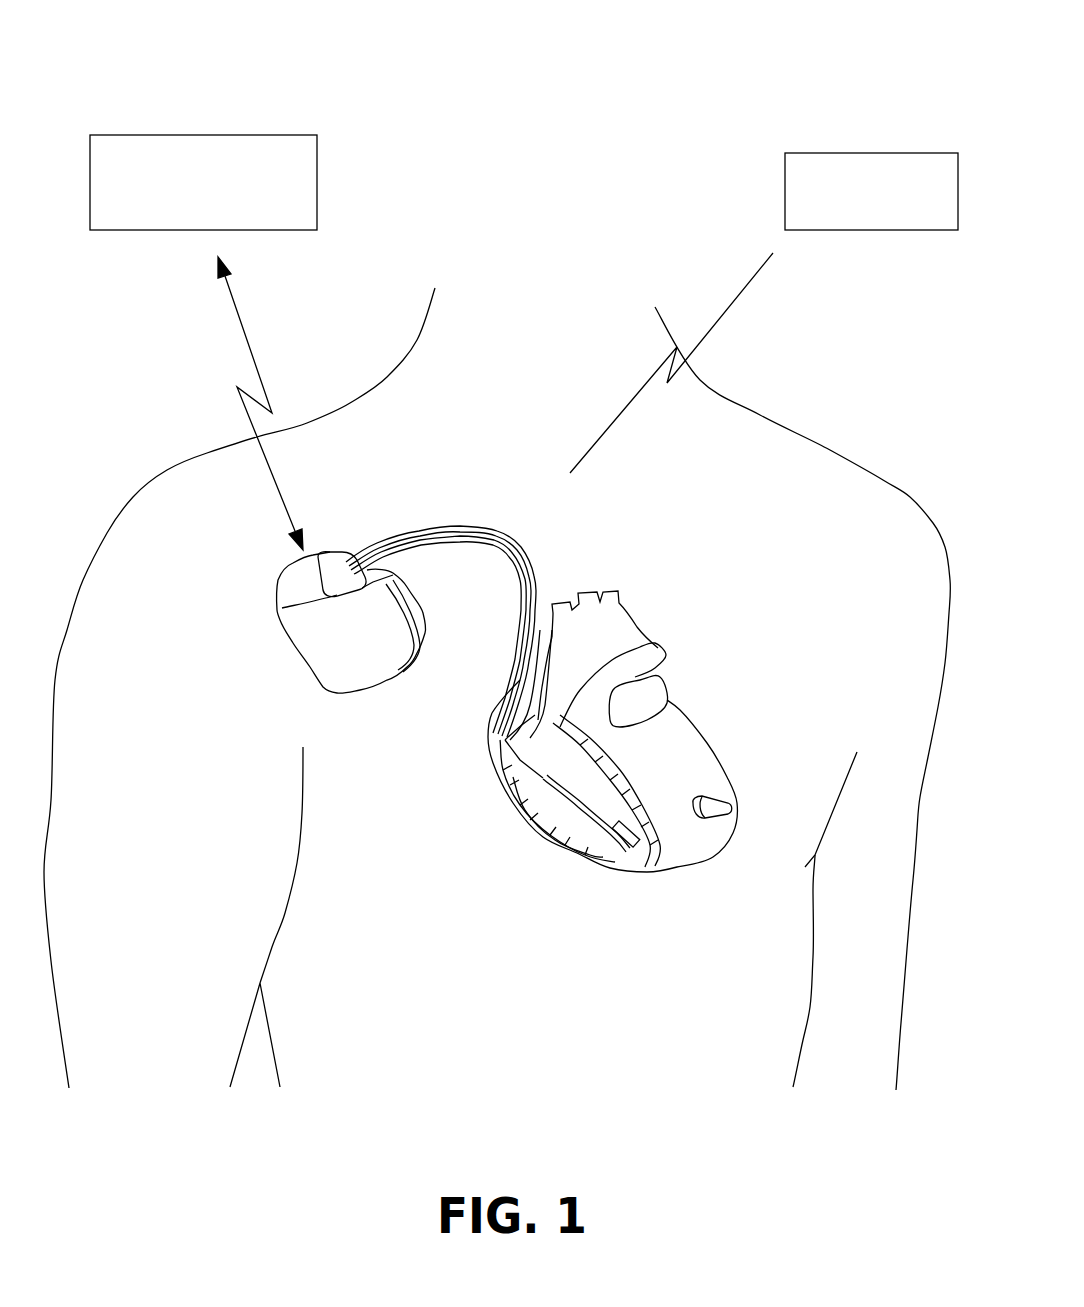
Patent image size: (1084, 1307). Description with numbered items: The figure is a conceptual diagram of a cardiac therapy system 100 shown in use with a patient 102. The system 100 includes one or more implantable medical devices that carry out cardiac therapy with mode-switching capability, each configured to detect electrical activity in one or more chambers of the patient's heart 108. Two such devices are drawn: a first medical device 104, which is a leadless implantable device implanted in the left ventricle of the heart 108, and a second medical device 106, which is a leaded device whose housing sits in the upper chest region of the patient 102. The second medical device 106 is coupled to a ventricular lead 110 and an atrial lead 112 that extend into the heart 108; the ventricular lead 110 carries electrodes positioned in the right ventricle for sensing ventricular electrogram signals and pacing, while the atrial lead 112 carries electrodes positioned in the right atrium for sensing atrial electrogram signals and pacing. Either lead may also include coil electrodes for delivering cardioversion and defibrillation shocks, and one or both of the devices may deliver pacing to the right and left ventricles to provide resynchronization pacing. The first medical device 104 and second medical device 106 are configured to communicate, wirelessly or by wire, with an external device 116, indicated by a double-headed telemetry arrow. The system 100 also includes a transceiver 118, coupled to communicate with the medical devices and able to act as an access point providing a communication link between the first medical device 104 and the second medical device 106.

The cardiac therapy system 100 is at (80, 52).
The patient 102 is at (848, 420).
The first medical device 104 is at (722, 800).
The second medical device 106 is at (274, 645).
The heart 108 is at (688, 894).
The ventricular lead 110 is at (511, 566).
The atrial lead 112 is at (503, 575).
The external device 116 is at (233, 218).
The transceiver 118 is at (907, 220).